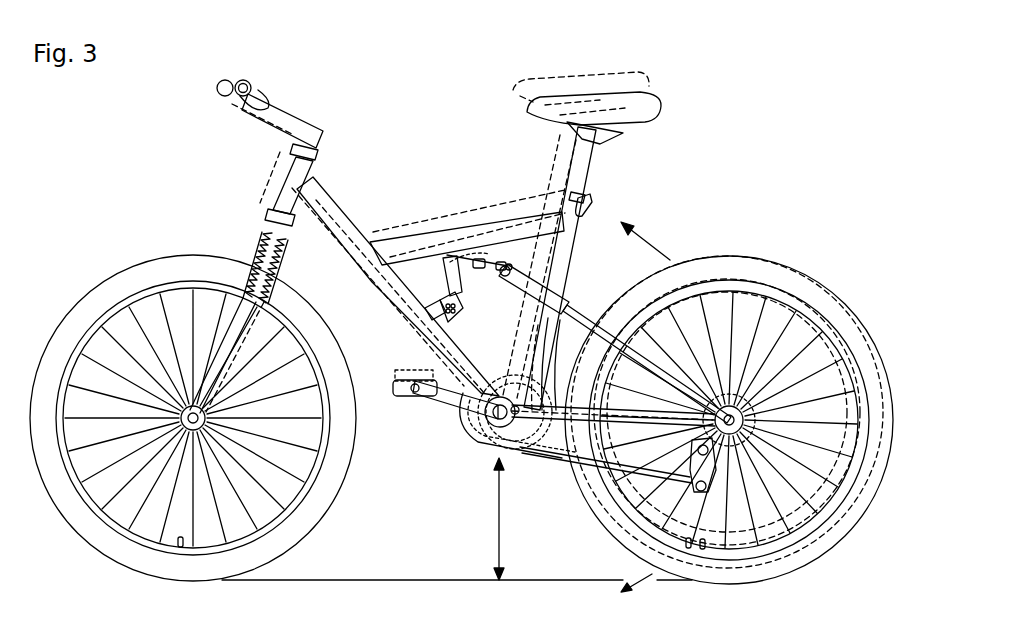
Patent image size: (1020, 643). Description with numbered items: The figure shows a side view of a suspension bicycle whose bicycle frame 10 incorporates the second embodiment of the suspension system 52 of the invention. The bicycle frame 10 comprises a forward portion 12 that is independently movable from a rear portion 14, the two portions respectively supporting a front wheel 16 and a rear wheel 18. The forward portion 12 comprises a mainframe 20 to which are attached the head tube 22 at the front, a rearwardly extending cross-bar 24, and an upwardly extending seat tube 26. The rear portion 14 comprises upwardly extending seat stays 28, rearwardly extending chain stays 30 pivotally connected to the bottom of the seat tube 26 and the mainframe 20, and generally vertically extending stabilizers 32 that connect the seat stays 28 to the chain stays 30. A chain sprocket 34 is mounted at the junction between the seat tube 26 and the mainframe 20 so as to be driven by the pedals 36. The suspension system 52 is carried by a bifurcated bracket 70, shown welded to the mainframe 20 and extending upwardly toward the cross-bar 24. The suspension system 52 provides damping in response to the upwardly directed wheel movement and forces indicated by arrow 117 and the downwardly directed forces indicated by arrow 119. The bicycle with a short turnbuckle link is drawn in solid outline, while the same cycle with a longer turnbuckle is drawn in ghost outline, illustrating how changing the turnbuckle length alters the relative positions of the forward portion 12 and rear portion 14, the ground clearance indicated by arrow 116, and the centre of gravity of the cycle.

The bicycle frame 10 is at (361, 96).
The forward portion 12 is at (329, 187).
The rear portion 14 is at (548, 288).
The front wheel 16 is at (150, 260).
The rear wheel 18 is at (783, 270).
The mainframe 20 is at (374, 281).
The head tube 22 is at (284, 178).
The cross-bar 24 is at (478, 228).
The seat tube 26 is at (572, 230).
The seat stays 28 is at (594, 324).
The chain stays 30 is at (577, 416).
The stabilizers 32 is at (546, 356).
The chain sprocket 34 is at (487, 436).
The pedals 36 is at (412, 392).
The suspension system 52 is at (489, 277).
The bifurcated bracket 70 is at (437, 318).
The ground clearance 116 is at (502, 528).
The upwardly directed forces arrow 117 is at (646, 241).
The downwardly directed forces arrow 119 is at (650, 580).